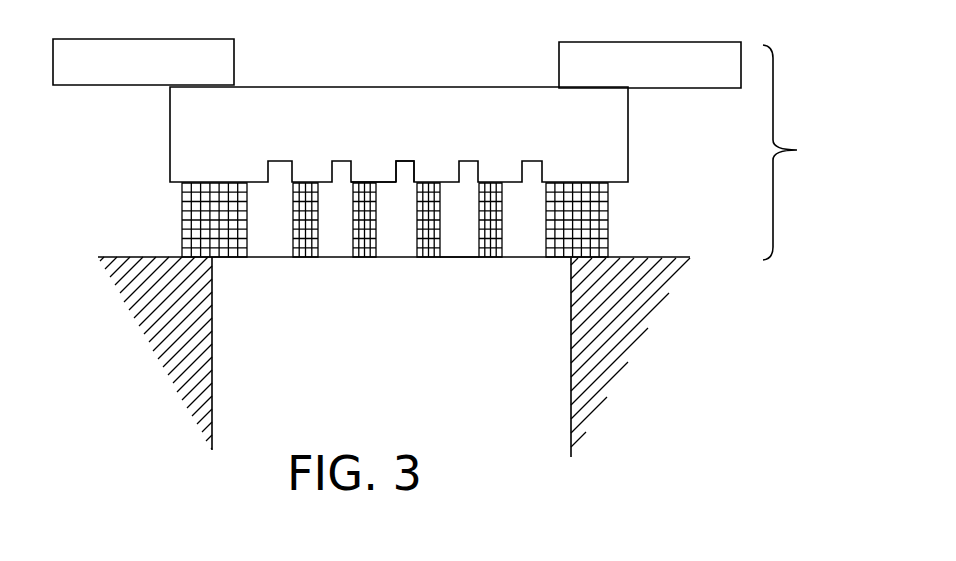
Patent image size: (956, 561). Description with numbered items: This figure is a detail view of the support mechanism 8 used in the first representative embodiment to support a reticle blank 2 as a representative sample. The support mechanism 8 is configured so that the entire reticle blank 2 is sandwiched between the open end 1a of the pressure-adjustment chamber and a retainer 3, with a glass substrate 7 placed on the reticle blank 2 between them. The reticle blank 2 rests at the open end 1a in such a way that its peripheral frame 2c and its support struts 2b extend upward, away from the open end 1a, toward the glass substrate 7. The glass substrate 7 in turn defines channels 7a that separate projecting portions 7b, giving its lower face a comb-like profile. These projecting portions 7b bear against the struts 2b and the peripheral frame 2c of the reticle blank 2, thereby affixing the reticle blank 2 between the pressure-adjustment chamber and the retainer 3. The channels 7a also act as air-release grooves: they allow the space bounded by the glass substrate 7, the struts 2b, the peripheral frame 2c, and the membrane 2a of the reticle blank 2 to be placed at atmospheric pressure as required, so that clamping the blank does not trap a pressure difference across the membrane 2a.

The open end 1a is at (622, 332).
The reticle blank 2 is at (445, 255).
The membrane 2a is at (457, 260).
The support struts 2b is at (318, 227).
The peripheral frame 2c is at (608, 227).
The retainer 3 is at (682, 73).
The glass substrate 7 is at (182, 136).
The channels 7a is at (403, 160).
The projecting portions 7b is at (382, 185).
The support mechanism 8 is at (793, 152).